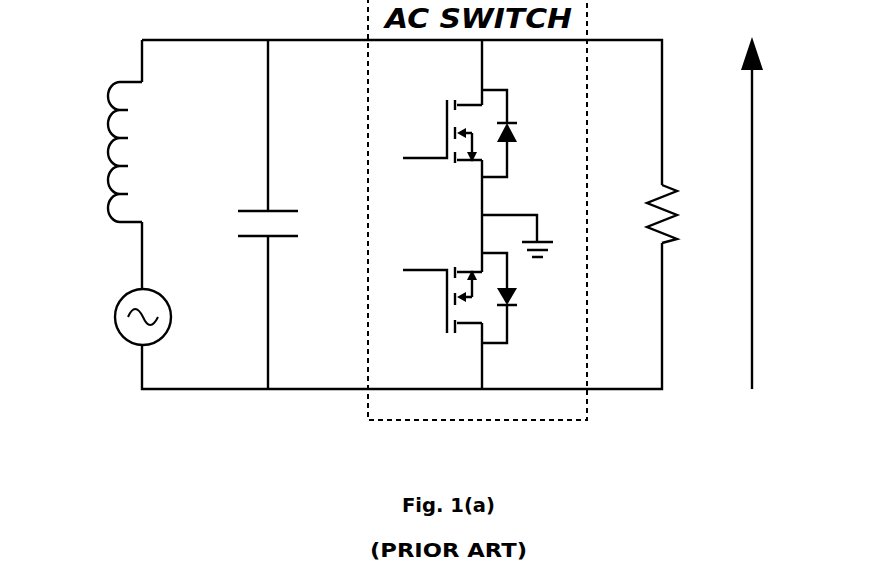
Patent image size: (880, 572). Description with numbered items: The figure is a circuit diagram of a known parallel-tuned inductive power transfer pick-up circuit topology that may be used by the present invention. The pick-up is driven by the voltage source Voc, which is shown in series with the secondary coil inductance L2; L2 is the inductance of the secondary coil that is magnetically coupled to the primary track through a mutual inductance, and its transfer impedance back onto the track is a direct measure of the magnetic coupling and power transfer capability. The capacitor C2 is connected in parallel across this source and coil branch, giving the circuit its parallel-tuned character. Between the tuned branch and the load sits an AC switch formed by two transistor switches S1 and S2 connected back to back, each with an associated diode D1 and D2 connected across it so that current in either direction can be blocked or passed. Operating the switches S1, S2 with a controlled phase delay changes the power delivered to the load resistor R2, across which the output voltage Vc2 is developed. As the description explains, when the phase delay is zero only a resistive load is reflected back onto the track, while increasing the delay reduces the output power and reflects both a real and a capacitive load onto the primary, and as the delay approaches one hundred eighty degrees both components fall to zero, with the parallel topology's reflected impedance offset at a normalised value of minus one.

The secondary coil inductance L2 is at (101, 152).
The tuning capacitor C2 is at (257, 214).
The open-circuit voltage source Voc is at (113, 317).
The switch S1 is at (436, 131).
The diode D1 is at (519, 133).
The switch S2 is at (436, 300).
The diode D2 is at (519, 298).
The load resistor R2 is at (682, 214).
The output voltage Vc2 is at (773, 213).